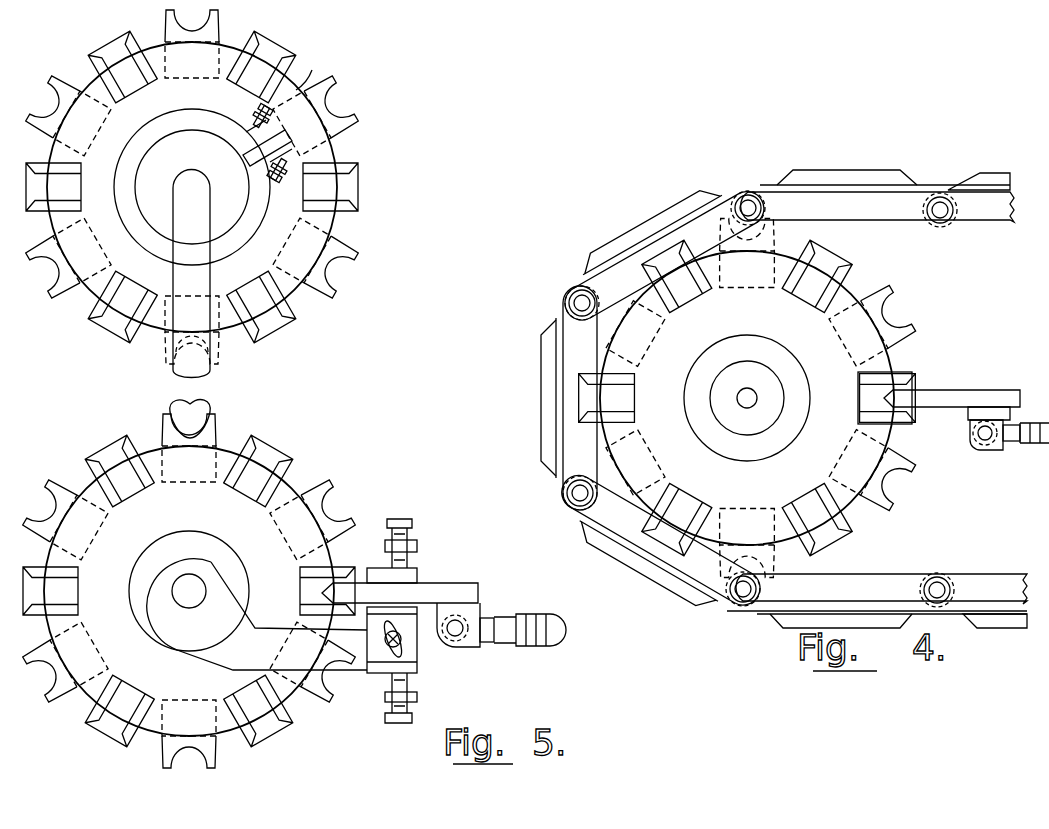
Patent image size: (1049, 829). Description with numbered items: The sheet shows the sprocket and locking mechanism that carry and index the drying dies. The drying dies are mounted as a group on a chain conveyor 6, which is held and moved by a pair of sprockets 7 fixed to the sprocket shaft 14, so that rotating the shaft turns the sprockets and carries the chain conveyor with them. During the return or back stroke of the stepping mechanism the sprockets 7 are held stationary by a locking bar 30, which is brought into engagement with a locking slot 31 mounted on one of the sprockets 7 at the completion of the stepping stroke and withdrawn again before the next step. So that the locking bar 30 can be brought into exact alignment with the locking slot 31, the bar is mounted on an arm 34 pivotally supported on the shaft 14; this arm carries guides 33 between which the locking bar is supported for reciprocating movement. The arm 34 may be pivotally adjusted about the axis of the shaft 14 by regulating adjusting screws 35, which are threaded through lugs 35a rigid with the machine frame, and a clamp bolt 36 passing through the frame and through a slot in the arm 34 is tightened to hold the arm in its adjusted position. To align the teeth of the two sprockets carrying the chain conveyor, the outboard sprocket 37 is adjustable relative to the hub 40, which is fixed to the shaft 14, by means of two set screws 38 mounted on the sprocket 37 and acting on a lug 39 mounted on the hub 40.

In FIG. 4, the chain conveyor 6 is at (903, 226).
In FIG. 5, the sprocket 7 is at (338, 226).
In FIG. 4, the sprocket 7 is at (910, 297).
In FIG. 5, the sprocket shaft 14 is at (176, 406).
In FIG. 4, the sprocket shaft 14 is at (756, 394).
In FIG. 5, the locking bar 30 is at (433, 582).
In FIG. 4, the locking bar 30 is at (925, 392).
In FIG. 4, the locking slot 31 is at (898, 386).
In FIG. 5, the guides 33 is at (408, 605).
In FIG. 5, the arm 34 is at (413, 652).
In FIG. 5, the adjusting screws 35 is at (412, 522).
In FIG. 5, the lugs 35a is at (386, 545).
In FIG. 5, the clamp bolt 36 is at (404, 640).
In FIG. 5, the outboard sprocket 37 is at (310, 80).
In FIG. 5, the set screws 38 is at (246, 110).
In FIG. 5, the lug 39 is at (305, 127).
In FIG. 5, the hub 40 is at (230, 222).